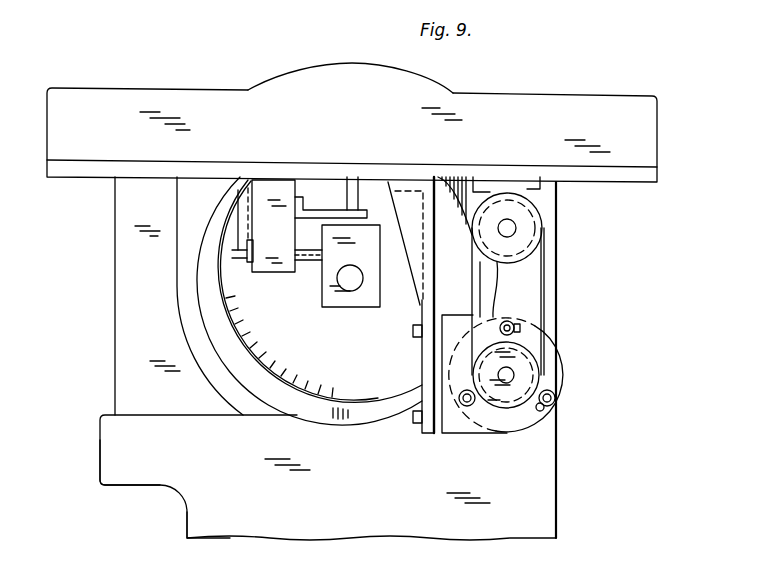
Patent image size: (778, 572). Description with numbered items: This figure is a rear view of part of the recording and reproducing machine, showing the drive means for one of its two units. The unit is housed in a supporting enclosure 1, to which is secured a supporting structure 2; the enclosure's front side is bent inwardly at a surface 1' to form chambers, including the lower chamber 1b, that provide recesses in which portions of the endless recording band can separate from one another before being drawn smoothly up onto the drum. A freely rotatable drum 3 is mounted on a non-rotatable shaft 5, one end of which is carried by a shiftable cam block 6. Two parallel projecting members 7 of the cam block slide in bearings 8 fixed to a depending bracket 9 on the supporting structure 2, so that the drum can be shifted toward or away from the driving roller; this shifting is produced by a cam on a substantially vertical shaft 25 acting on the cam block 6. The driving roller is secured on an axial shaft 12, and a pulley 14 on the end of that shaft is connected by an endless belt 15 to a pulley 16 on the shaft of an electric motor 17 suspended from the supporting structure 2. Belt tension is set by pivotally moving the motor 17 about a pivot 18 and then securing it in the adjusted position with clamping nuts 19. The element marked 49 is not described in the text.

The supporting enclosure 1 is at (339, 358).
The lower chamber 1b is at (135, 478).
The inwardly bent surface 1' is at (190, 527).
The supporting structure 2 is at (647, 184).
The raised dome of table 49 is at (622, 96).
The drum 3 is at (351, 395).
The non-rotatable shaft 5 is at (350, 291).
The cam block 6 is at (367, 305).
The projecting members 7 is at (232, 255).
The bearings 8 is at (272, 274).
The depending bracket 9 is at (266, 226).
The vertical shaft 25 is at (347, 187).
The axial shaft 12 is at (513, 232).
The pulley 14 is at (545, 222).
The endless belt 15 is at (546, 306).
The pulley 16 is at (532, 378).
The electric motor 17 is at (563, 385).
The pivot 18 is at (467, 406).
The clamping nuts 19 is at (507, 322).